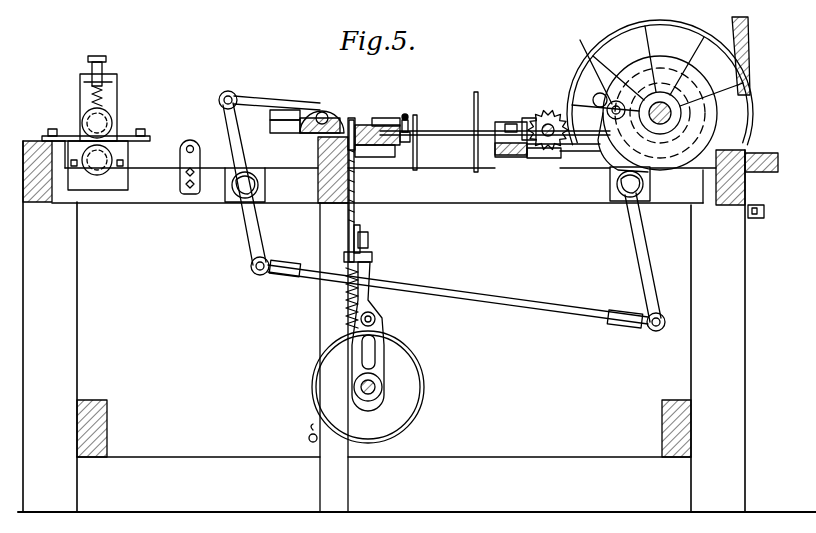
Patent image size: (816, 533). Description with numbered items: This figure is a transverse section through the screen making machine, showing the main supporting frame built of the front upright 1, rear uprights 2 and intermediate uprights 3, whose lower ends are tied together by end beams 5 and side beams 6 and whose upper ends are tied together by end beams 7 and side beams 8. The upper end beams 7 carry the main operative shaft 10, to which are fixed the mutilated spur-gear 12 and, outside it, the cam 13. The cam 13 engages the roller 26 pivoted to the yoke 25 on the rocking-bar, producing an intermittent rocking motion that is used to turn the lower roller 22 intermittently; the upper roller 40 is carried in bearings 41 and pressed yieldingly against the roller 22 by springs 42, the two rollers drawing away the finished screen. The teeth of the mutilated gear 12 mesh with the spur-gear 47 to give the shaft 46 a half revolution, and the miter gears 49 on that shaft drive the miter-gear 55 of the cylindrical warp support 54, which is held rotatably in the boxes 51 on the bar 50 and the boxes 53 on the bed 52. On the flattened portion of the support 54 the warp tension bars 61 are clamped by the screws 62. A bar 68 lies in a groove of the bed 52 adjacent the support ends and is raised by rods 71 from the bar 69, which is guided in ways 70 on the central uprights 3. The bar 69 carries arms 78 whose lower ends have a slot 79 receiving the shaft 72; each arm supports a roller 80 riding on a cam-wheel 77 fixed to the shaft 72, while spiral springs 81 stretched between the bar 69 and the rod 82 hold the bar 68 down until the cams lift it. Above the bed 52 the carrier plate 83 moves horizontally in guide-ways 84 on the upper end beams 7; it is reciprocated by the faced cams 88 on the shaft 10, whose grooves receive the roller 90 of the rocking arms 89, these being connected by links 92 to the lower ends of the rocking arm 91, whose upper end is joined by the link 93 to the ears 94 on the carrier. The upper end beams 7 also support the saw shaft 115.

The front upright 1 is at (745, 380).
The rear uprights 2 is at (78, 338).
The intermediate uprights 3 is at (320, 333).
The end beams 5 is at (434, 500).
The side beams 6 is at (107, 430).
The end beams 7 is at (512, 198).
The side beams 8 is at (30, 141).
The main operative shaft 10 is at (666, 122).
The mutilated spur-gear 12 is at (672, 22).
The cam 13 is at (704, 50).
The roller 22 is at (97, 175).
The yoke 25 is at (604, 100).
The roller 26 is at (595, 102).
The roller 40 is at (113, 122).
The bearings 41 is at (110, 108).
The springs 42 is at (104, 92).
The shaft 46 is at (548, 150).
The spur-gear 47 is at (530, 118).
The miter gears 49 is at (565, 150).
The bar 50 is at (512, 157).
The boxes 51 is at (508, 122).
The bed 52 is at (378, 157).
The boxes 53 is at (386, 118).
The support 54 is at (452, 131).
The miter-gear 55 is at (538, 158).
The bars 61 is at (410, 130).
The screws 62 is at (406, 114).
The bar 68 is at (352, 118).
The bar 69 is at (344, 256).
The ways 70 is at (368, 240).
The rods 71 is at (354, 214).
The shaft 72 is at (354, 387).
The cam-wheels 77 is at (422, 385).
The arms 78 is at (372, 296).
The slot 79 is at (372, 348).
The roller 80 is at (376, 319).
The spiral springs 81 is at (344, 300).
The rod 82 is at (309, 439).
The plate 83 is at (312, 118).
The guide-ways 84 is at (290, 105).
The faced cams 88 is at (616, 100).
The rocking arms 89 is at (636, 249).
The roller 90 is at (589, 62).
The rocking arm 91 is at (248, 232).
The links 92 is at (506, 294).
The link 93 is at (246, 100).
The ears 94 is at (340, 108).
The shaft 115 is at (190, 146).